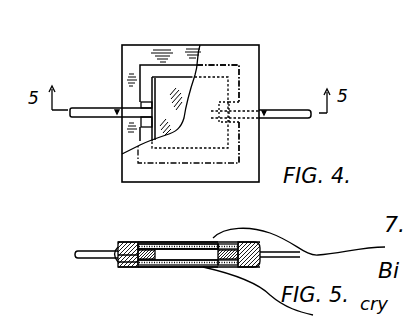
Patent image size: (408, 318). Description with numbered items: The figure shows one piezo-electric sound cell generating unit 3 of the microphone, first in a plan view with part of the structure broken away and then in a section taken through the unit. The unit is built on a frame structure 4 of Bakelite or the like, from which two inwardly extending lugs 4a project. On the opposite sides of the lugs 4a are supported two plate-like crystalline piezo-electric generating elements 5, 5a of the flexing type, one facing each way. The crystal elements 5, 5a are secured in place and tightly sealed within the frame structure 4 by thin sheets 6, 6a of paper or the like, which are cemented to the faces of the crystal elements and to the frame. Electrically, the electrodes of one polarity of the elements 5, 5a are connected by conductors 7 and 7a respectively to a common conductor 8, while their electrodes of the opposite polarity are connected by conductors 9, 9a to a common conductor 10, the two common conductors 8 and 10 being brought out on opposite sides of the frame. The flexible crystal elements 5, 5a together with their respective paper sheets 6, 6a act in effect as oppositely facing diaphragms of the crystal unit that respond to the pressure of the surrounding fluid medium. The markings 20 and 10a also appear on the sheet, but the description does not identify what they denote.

In FIG. 4, the sound cell generating unit 3 is at (262, 61).
In FIG. 5, the sound cell generating unit 3 is at (205, 236).
In FIG. 4, the frame structure 4 is at (128, 52).
In FIG. 5, the frame structure 4 is at (117, 245).
In FIG. 4, the inwardly extending lugs 4a is at (279, 90).
In FIG. 5, the inwardly extending lugs 4a is at (146, 250).
In FIG. 4, the crystalline piezo-electric generating element 5 is at (172, 77).
In FIG. 5, the crystalline piezo-electric generating element 5 is at (180, 242).
In FIG. 5, the crystalline piezo-electric generating element 5a is at (177, 267).
In FIG. 4, the thin sheet 6 is at (200, 45).
In FIG. 5, the thin sheet 6 is at (193, 242).
In FIG. 5, the thin sheet 6a is at (160, 268).
In FIG. 4, the conductor 7 is at (127, 115).
In FIG. 5, the conductor 7 is at (120, 242).
In FIG. 5, the conductor 7a is at (118, 263).
In FIG. 4, the common conductor 8 is at (77, 118).
In FIG. 5, the common conductor 8 is at (82, 253).
In FIG. 4, the conductor 9 is at (251, 122).
In FIG. 5, the conductor 9 is at (262, 245).
In FIG. 5, the conductor 9a is at (262, 260).
In FIG. 4, the common conductor 10 is at (301, 113).
In FIG. 5, the common conductor 10 is at (298, 253).
In FIG. 5, the element 20 is at (93, 309).
In FIG. 5, the lead rod portion 10a is at (199, 311).